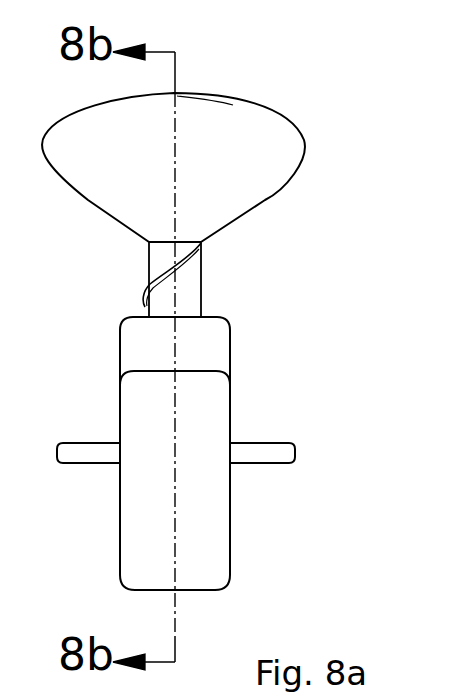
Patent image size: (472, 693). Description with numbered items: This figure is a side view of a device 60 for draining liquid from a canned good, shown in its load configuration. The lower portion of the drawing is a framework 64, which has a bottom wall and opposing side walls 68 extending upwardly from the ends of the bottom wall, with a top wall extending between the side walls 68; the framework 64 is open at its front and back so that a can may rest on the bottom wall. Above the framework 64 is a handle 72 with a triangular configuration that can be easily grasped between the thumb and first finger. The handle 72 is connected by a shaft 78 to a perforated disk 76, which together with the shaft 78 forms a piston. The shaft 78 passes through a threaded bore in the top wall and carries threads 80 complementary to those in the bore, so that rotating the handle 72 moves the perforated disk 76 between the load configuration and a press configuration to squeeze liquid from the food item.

The device 60 is at (307, 82).
The handle 72 is at (275, 180).
The shaft 78 is at (203, 287).
The threads 80 is at (146, 287).
The framework 64 is at (108, 378).
The side walls 68 is at (228, 523).
The perforated disk 76 is at (279, 443).